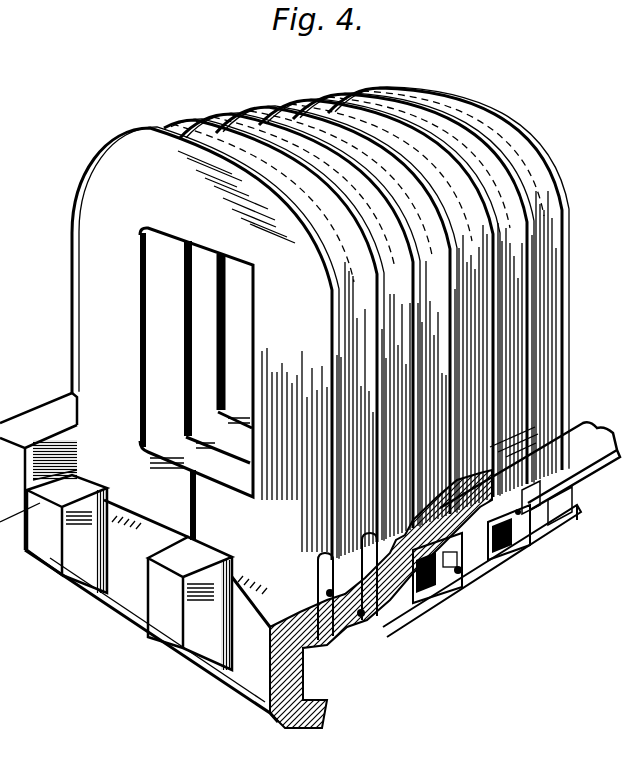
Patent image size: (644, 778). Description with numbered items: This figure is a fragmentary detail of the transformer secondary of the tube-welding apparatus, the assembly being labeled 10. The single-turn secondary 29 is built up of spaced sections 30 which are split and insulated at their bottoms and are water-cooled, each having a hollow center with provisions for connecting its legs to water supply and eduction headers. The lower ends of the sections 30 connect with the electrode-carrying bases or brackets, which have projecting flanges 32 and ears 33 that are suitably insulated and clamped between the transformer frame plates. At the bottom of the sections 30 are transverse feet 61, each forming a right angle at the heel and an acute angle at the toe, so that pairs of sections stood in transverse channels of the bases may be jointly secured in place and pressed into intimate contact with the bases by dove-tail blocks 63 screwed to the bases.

The electromagnet assembly 10 is at (0, 690).
The single-turn secondary 29 is at (143, 618).
The spaced sections of the secondary 30 is at (193, 94).
The projecting flanges 32 is at (43, 410).
The ears 33 is at (150, 560).
The transverse feet 61 is at (342, 620).
The dove-tail blocks 63 is at (360, 638).